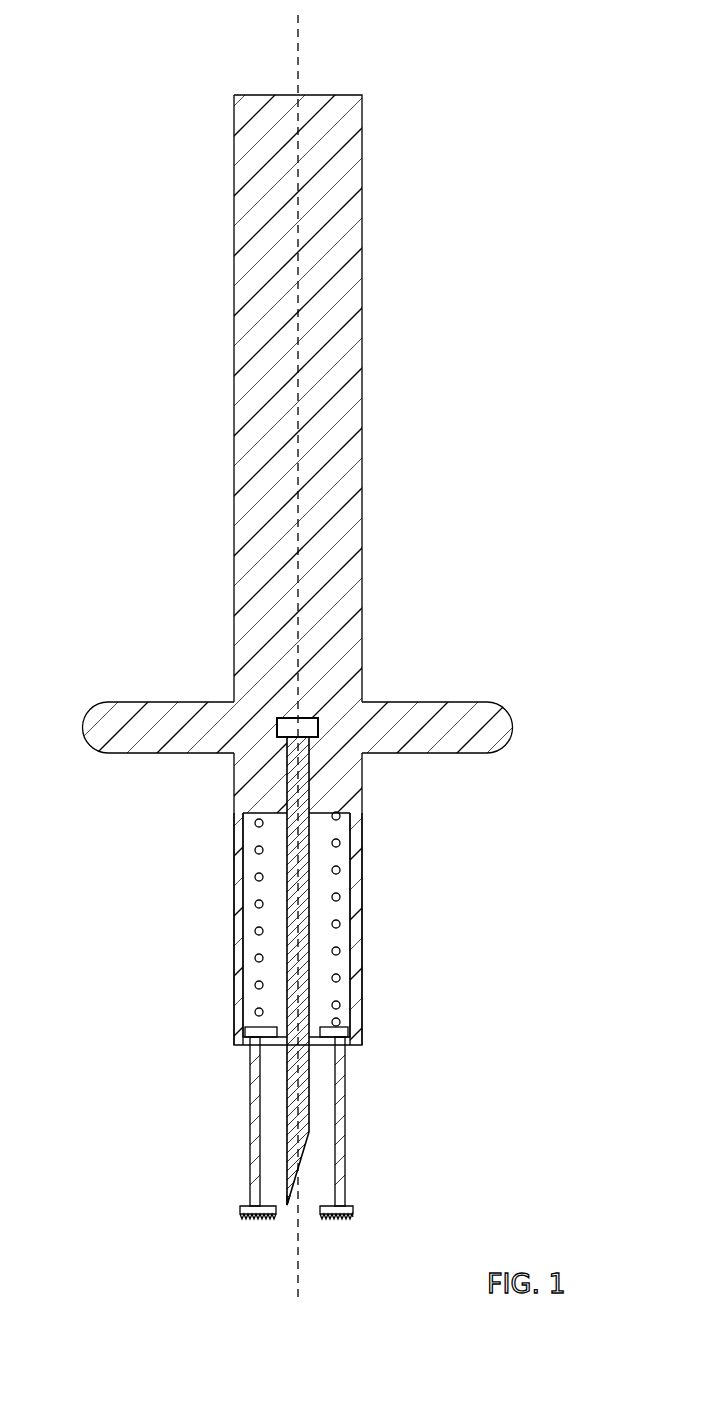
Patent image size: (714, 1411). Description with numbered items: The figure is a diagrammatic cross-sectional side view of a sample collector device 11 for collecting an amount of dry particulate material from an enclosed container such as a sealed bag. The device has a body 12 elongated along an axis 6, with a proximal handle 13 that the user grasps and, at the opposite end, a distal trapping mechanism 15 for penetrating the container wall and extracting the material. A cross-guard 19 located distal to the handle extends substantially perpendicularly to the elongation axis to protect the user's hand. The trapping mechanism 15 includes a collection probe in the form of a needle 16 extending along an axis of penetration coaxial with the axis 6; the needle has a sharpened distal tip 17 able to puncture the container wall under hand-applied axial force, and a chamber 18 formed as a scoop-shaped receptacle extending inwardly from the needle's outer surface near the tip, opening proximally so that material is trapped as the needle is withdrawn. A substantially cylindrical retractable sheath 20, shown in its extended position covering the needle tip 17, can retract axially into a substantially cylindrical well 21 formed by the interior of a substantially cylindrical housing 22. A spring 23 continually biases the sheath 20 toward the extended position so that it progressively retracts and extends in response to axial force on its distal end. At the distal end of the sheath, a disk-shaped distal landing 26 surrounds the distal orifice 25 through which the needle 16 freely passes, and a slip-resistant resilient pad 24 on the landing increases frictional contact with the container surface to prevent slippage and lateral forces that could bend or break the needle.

The sample collector device 11 is at (70, 99).
The body 12 is at (333, 538).
The proximal handle 13 is at (258, 95).
The axis 6 is at (302, 38).
The cross-guard 19 is at (515, 722).
The trapping mechanism 15 is at (146, 985).
The needle 16 is at (319, 993).
The chamber 18 is at (310, 1133).
The well 21 is at (322, 890).
The housing 22 is at (362, 920).
The spring 23 is at (337, 842).
The retractable sheath 20 is at (253, 1110).
The distal tip 17 is at (287, 1203).
The slip-resistant resilient pad 24 is at (335, 1220).
The distal landing 26 is at (352, 1207).
The distal orifice 25 is at (284, 1227).